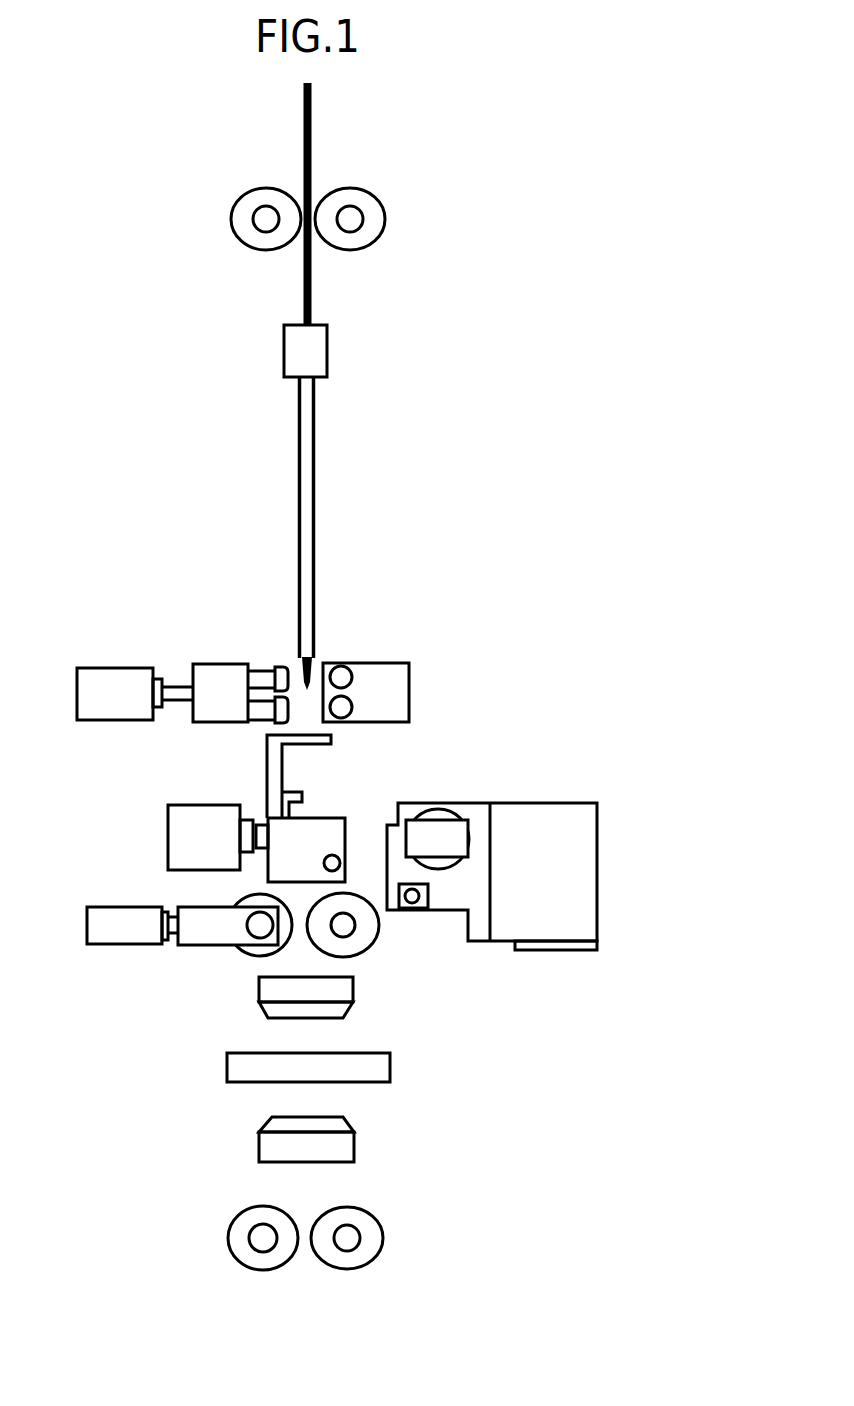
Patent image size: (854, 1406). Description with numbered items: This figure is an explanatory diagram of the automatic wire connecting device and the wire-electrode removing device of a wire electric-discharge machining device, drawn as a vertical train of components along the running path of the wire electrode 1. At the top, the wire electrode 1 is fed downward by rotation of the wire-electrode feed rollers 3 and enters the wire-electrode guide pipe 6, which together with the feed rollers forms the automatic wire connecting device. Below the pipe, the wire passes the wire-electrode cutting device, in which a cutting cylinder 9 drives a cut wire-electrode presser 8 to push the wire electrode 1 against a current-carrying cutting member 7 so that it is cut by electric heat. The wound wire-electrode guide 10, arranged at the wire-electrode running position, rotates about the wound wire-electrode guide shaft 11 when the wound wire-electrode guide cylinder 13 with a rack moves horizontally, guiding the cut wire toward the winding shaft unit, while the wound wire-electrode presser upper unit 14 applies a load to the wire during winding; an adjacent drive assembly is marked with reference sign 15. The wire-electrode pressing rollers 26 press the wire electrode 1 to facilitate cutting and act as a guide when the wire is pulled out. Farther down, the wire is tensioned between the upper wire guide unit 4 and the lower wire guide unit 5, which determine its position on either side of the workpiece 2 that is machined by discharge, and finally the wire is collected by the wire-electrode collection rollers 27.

The wire electrode 1 is at (312, 115).
The workpiece 2 is at (392, 1058).
The wire-electrode feed rollers 3 is at (385, 212).
The upper wire guide unit 4 is at (355, 995).
The lower wire guide unit 5 is at (355, 1140).
The wire-electrode guide pipe 6 is at (327, 328).
The current-carrying cutting member 7 is at (412, 680).
The cut wire-electrode presser 8 is at (195, 664).
The cutting cylinder 9 is at (77, 668).
The wound wire-electrode guide 10 is at (267, 737).
The wound wire-electrode guide shaft 11 is at (350, 855).
The wound wire-electrode guide cylinder with a rack 13 is at (172, 803).
The wound wire-electrode presser upper unit 14 is at (305, 802).
The drive unit 15 is at (390, 910).
The wire-electrode pressing rollers 26 is at (87, 907).
The wire-electrode collection rollers 27 is at (385, 1240).